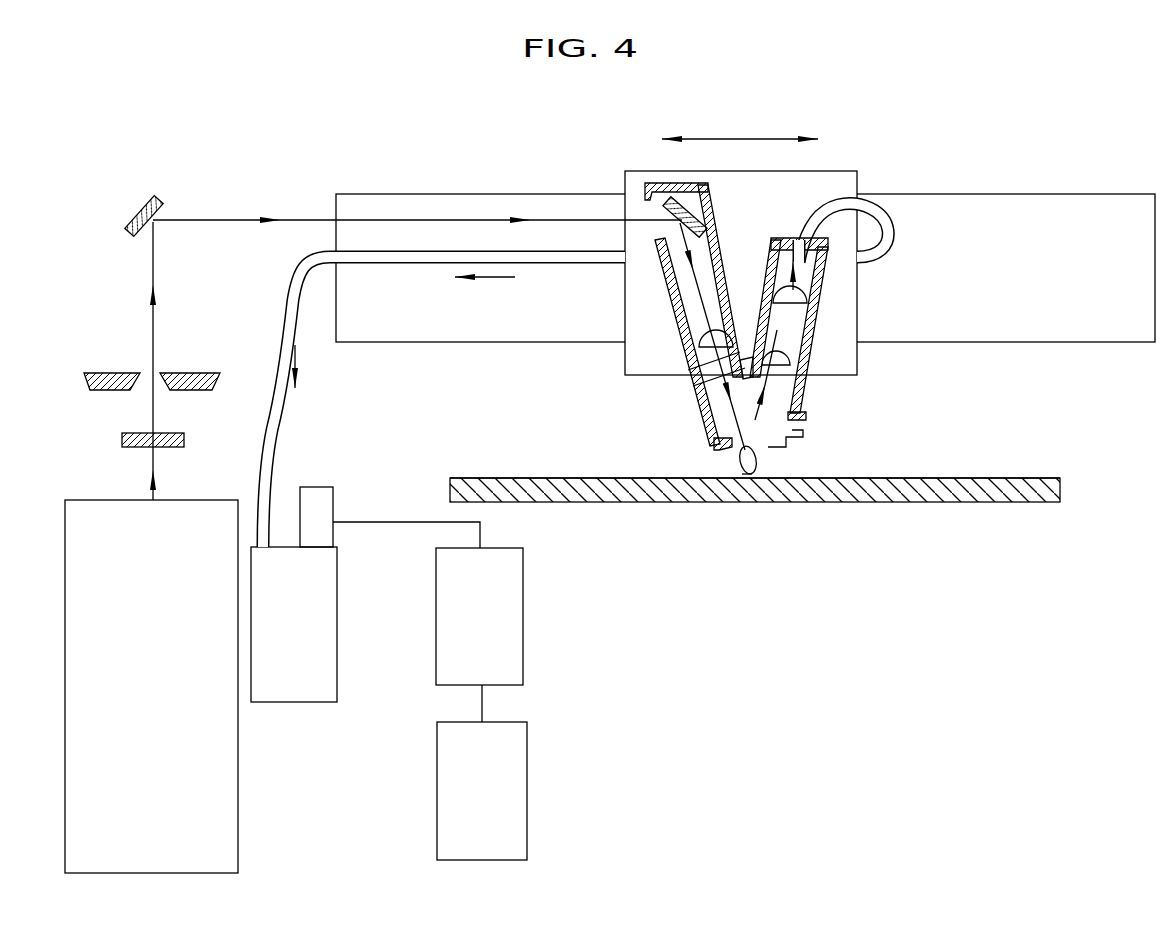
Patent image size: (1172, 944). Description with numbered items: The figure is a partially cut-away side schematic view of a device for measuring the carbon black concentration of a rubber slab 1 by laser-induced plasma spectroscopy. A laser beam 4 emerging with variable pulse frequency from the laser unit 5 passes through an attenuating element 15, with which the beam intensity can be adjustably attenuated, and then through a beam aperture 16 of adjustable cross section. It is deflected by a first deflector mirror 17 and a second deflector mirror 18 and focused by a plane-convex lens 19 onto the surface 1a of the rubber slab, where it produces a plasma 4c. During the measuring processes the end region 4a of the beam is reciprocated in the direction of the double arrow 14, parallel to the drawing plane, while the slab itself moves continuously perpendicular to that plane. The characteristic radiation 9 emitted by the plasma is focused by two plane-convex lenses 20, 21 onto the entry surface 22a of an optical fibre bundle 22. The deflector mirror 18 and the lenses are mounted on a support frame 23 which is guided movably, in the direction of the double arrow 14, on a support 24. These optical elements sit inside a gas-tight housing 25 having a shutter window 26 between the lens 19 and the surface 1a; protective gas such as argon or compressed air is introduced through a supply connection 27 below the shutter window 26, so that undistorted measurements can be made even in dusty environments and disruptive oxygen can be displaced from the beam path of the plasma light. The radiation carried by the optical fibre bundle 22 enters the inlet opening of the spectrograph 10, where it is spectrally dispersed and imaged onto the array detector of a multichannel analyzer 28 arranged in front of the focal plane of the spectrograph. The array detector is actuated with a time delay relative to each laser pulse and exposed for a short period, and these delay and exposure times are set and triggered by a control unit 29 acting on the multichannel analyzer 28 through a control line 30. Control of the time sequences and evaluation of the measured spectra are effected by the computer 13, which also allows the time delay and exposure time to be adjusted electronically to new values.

The rubber slab 1 is at (1010, 498).
The surface of the rubber slab 1a is at (996, 478).
The laser beam 4 is at (213, 218).
The end region of the laser beam 4a is at (760, 462).
The plasma 4c is at (740, 478).
The laser unit 5 is at (159, 687).
The characteristic radiation 9 is at (770, 394).
The spectrograph 10 is at (304, 635).
The computer 13 is at (495, 798).
The double arrow 14 is at (742, 138).
The attenuating element 15 is at (124, 446).
The beam aperture 16 is at (118, 372).
The deflector mirror 17 is at (143, 202).
The deflector mirror 18 is at (708, 203).
The plane-convex lens 19 is at (684, 350).
The plane-convex lens 20 is at (808, 367).
The plane-convex lens 21 is at (826, 305).
The optical fibre bundle 22 is at (310, 251).
The entry surface of the optical fibre bundle 22a is at (830, 262).
The support frame 23 is at (832, 168).
The support 24 is at (1134, 300).
The gas-tight housing 25 is at (655, 290).
The shutter window 26 is at (698, 397).
The supply connection 27 is at (808, 428).
The multichannel analyzer 28 is at (318, 502).
The control unit 29 is at (492, 622).
The control line 30 is at (386, 522).